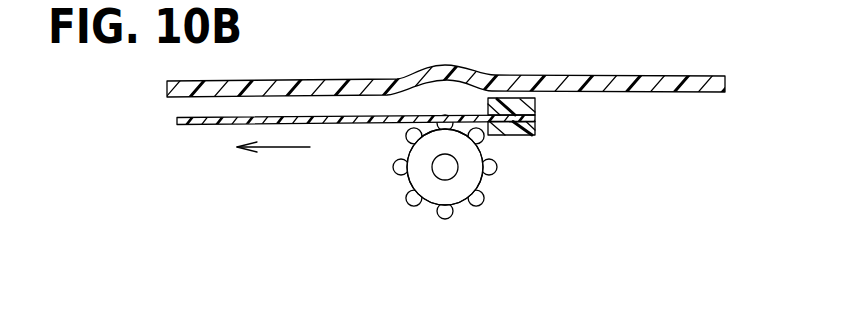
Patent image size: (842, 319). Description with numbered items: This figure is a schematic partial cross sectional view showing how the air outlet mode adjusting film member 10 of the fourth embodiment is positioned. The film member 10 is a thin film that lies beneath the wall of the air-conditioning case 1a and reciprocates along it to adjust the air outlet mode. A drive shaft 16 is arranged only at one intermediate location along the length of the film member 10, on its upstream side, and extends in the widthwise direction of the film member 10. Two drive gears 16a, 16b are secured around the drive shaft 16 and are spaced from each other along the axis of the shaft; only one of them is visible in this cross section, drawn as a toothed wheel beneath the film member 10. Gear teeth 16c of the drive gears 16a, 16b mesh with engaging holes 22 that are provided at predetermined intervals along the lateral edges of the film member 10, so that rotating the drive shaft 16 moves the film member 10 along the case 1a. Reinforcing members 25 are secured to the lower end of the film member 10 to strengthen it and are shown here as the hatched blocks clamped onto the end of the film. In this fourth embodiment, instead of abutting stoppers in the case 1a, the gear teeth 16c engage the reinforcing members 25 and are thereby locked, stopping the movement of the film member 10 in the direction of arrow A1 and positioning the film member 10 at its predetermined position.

The air-conditioning case 1a is at (337, 78).
The engaging hole 22 is at (480, 11).
The air outlet mode adjusting film member 10 is at (200, 125).
The movement direction A1 is at (275, 150).
The reinforcing member 25 is at (535, 102).
The drive shaft 16 is at (458, 204).
The drive gear 16a is at (462, 211).
The drive gear 16b is at (455, 193).
The gear teeth 16c is at (406, 204).